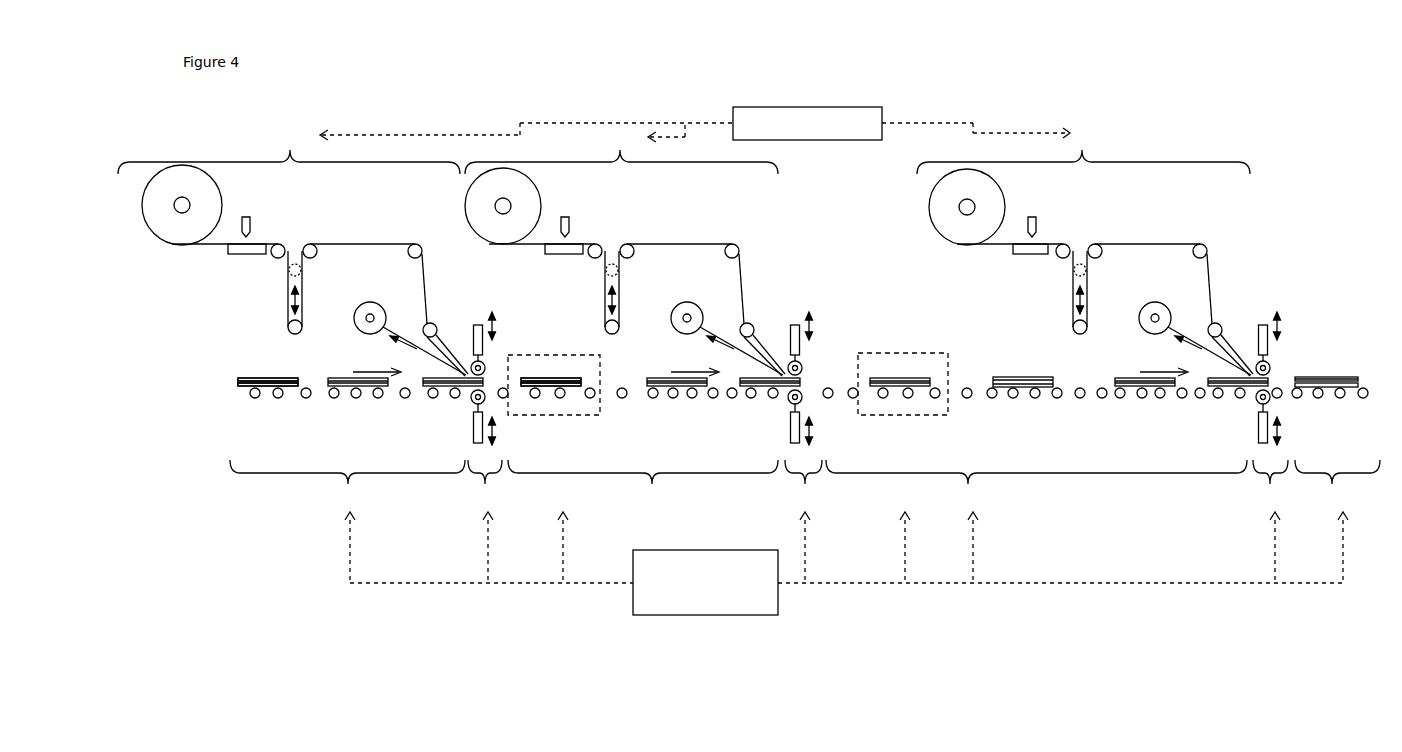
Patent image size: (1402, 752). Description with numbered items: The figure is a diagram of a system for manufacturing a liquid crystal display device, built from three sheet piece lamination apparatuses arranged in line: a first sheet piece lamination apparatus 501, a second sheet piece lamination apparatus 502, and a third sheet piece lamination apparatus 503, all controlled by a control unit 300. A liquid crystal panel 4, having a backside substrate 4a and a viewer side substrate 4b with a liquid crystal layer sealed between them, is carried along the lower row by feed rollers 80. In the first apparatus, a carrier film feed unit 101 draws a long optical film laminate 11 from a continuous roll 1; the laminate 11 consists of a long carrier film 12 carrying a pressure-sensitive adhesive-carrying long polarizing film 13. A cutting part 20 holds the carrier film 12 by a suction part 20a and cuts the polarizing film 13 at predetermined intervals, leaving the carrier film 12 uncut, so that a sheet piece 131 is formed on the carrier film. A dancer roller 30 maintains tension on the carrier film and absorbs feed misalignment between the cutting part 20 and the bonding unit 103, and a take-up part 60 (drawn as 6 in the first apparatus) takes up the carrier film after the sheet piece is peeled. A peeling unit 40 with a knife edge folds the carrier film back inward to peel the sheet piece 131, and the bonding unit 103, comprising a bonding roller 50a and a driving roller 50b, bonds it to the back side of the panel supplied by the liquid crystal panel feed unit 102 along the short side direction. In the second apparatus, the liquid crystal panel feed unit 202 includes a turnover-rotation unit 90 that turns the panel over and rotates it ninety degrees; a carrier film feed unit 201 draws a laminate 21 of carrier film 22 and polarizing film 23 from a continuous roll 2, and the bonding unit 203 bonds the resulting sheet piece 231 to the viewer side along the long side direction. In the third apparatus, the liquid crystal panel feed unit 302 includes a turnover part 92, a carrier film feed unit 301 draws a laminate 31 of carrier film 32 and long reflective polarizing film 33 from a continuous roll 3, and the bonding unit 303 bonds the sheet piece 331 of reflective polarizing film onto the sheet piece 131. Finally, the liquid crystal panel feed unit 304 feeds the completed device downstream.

The continuous roll 1 is at (163, 216).
The continuous roll 2 is at (479, 217).
The continuous roll 3 is at (953, 231).
The long optical film laminate 11 is at (213, 245).
The long carrier film 12 is at (378, 330).
The long polarizing film 13 is at (176, 341).
The long optical film laminate 21 is at (540, 243).
The long carrier film 22 is at (700, 333).
The long polarizing film 23 is at (649, 226).
The long optical film laminate 31 is at (990, 245).
The long carrier film 32 is at (1165, 332).
The long reflective polarizing film 33 is at (993, 334).
The cutting part 20 is at (246, 214).
The suction part 20a is at (248, 256).
The dancer roller 30 is at (283, 311).
The release liner take-up roll 6 is at (365, 304).
The take-up part 60 is at (683, 304).
The liquid crystal panel 4 is at (442, 357).
The backside substrate 4a is at (238, 378).
The viewer side substrate 4b is at (238, 386).
The peeling unit 40 is at (760, 357).
The bonding roller 50a is at (479, 318).
The driving roller 50b is at (470, 398).
The feed roller 80 is at (334, 408).
The turnover-rotation unit 90 is at (548, 425).
The turnover part 92 is at (888, 425).
The sheet piece of polarizing film 131 is at (573, 389).
The sheet piece of polarizing film 231 is at (1003, 388).
The sheet piece of reflective polarizing film 331 is at (1335, 376).
The carrier film feed unit 101 is at (290, 138).
The liquid crystal panel feed unit 102 is at (350, 498).
The bonding unit 103 is at (489, 498).
The carrier film feed unit 201 is at (612, 138).
The liquid crystal panel feed unit 202 is at (652, 498).
The bonding unit 203 is at (807, 498).
The carrier film feed unit 301 is at (1085, 136).
The liquid crystal panel feed unit 302 is at (975, 498).
The bonding unit 303 is at (1275, 498).
The liquid crystal panel feed unit 304 is at (1344, 500).
The control unit 300 is at (834, 361).
The first sheet piece lamination apparatus 501 is at (235, 152).
The second sheet piece lamination apparatus 502 is at (528, 150).
The third sheet piece lamination apparatus 503 is at (1257, 150).